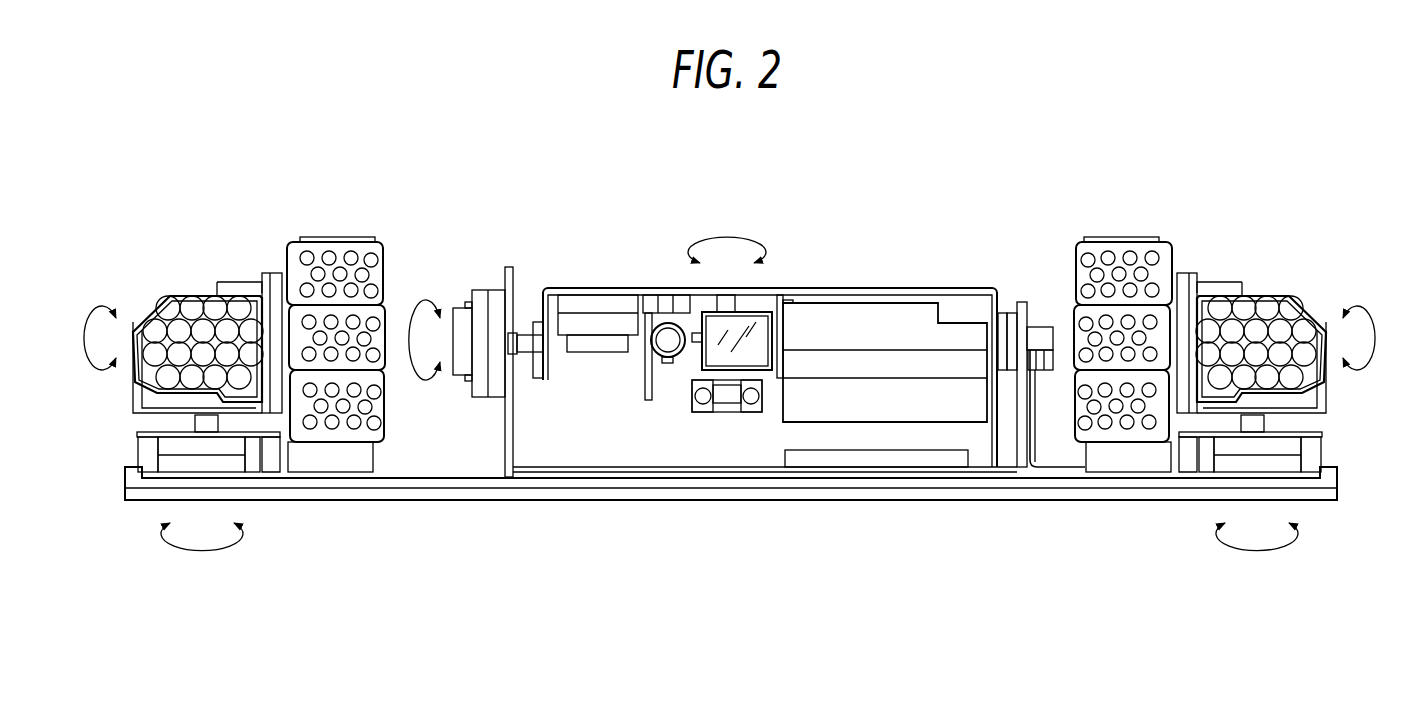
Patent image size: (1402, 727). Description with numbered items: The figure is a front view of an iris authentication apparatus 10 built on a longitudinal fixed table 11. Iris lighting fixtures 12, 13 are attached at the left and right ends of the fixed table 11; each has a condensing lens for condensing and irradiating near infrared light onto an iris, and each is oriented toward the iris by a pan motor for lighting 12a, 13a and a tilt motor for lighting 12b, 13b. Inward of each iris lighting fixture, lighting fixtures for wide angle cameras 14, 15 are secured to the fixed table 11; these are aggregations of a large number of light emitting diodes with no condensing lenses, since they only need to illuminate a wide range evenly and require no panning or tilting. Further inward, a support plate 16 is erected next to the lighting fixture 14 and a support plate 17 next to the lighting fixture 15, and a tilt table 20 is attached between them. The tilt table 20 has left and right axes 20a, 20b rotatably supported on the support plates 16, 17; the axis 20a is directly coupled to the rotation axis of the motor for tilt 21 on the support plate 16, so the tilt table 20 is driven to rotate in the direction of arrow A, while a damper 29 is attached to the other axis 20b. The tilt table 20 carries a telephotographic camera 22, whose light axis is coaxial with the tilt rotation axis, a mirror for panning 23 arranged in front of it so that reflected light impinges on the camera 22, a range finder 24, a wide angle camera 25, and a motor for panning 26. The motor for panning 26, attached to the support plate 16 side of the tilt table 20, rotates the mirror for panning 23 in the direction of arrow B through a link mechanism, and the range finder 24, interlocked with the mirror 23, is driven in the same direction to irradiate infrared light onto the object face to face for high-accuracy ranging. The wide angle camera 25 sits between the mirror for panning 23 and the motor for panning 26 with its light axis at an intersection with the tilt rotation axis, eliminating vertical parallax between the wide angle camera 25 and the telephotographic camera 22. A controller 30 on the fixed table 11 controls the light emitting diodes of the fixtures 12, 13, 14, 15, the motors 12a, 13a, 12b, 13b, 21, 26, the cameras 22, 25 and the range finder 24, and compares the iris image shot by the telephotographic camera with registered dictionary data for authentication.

The iris authentication apparatus 10 is at (747, 364).
The longitudinal fixed table 11 is at (430, 493).
The iris lighting fixture 12 is at (190, 303).
The pan motor for lighting 12a is at (165, 463).
The tilt motor for lighting 12b is at (270, 310).
The iris lighting fixture 13 is at (1272, 303).
The pan motor for lighting 13a is at (1295, 463).
The tilt motor for lighting 13b is at (1185, 300).
The lighting fixture for wide angle camera 14 is at (323, 250).
The lighting fixture for wide angle camera 15 is at (1130, 252).
The support plate 16 is at (513, 280).
The support plate 17 is at (1020, 302).
The tilt table 20 is at (827, 285).
The axis 20a is at (530, 355).
The axis 20b is at (1042, 327).
The motor for tilt 21 is at (480, 293).
The telephotographic camera 22 is at (875, 407).
The mirror for panning 23 is at (713, 350).
The range finder 24 is at (725, 402).
The wide angle camera 25 is at (667, 333).
The motor for panning 26 is at (597, 297).
The damper 29 is at (1030, 438).
The controller 30 is at (812, 462).
The arrow A is at (418, 382).
The arrow B is at (727, 236).